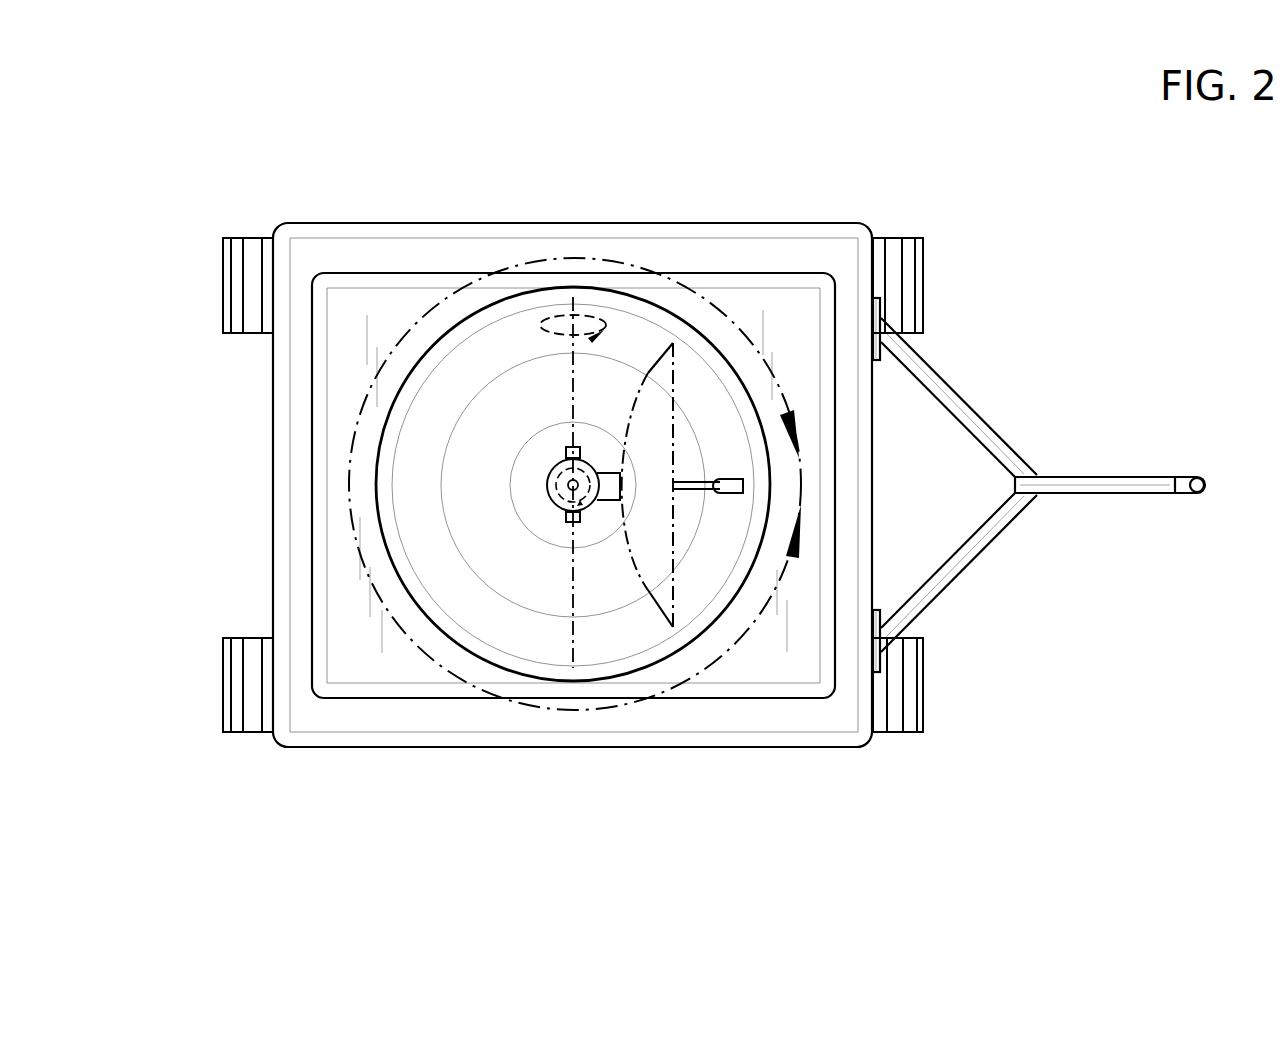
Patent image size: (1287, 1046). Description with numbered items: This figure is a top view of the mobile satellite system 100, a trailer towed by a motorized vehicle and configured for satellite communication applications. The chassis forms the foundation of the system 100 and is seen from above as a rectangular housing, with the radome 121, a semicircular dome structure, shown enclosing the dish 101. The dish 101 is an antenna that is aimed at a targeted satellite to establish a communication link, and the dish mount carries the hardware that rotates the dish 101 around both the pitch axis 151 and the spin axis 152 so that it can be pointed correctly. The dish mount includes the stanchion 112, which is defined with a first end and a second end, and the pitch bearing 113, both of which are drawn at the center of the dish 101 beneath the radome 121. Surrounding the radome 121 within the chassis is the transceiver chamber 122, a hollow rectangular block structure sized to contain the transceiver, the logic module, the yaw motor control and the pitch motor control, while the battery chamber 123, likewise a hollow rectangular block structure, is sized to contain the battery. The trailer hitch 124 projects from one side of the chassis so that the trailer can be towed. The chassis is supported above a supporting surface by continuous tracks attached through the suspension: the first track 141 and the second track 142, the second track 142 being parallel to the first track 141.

The mobile satellite system 100 is at (224, 136).
The dish 101 is at (658, 567).
The stanchion 112 is at (563, 497).
The pitch bearing 113 is at (573, 447).
The radome 121 is at (432, 347).
The transceiver chamber 122 is at (793, 297).
The battery chamber 123 is at (857, 240).
The trailer hitch 124 is at (1097, 483).
The first track 141 is at (923, 296).
The second track 142 is at (922, 691).
The pitch axis 151 is at (573, 372).
The spin axis 152 is at (586, 468).